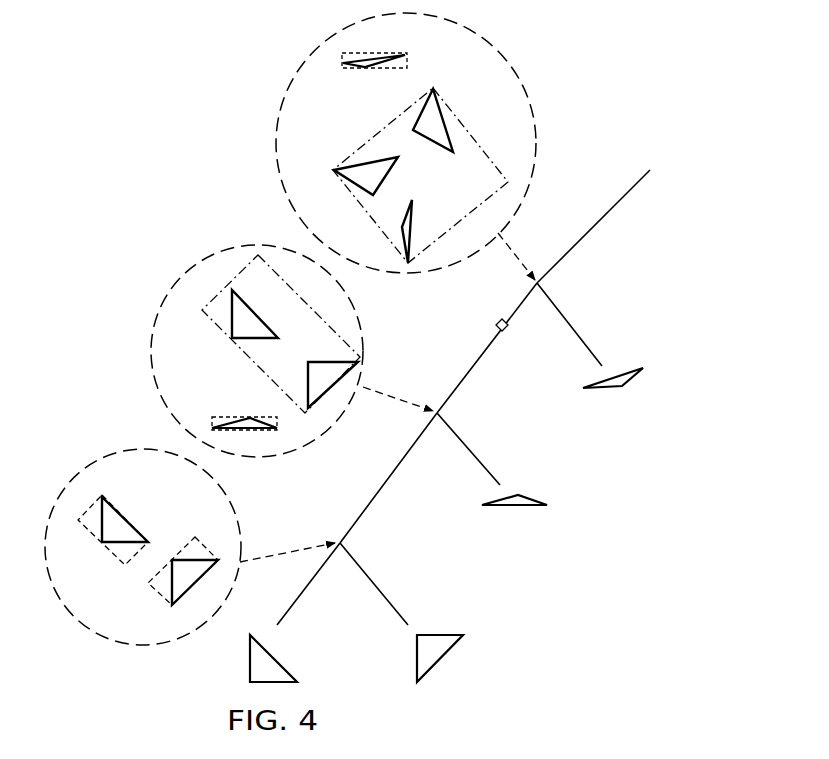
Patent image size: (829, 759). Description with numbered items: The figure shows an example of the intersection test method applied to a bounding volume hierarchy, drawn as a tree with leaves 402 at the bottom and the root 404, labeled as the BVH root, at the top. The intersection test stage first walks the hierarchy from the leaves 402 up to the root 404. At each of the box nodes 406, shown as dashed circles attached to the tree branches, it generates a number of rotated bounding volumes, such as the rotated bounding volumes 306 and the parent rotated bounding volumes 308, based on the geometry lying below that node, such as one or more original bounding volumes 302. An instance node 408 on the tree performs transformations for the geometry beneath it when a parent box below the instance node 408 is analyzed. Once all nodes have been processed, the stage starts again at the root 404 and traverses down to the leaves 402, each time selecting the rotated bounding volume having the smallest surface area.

The original bounding volume 302 is at (357, 68).
The rotated bounding volume 306 is at (118, 510).
The parent rotated bounding volume 308 is at (472, 134).
The leaf 402 is at (630, 370).
The root 404 is at (650, 142).
The box node 406 is at (308, 57).
The instance node 408 is at (506, 329).